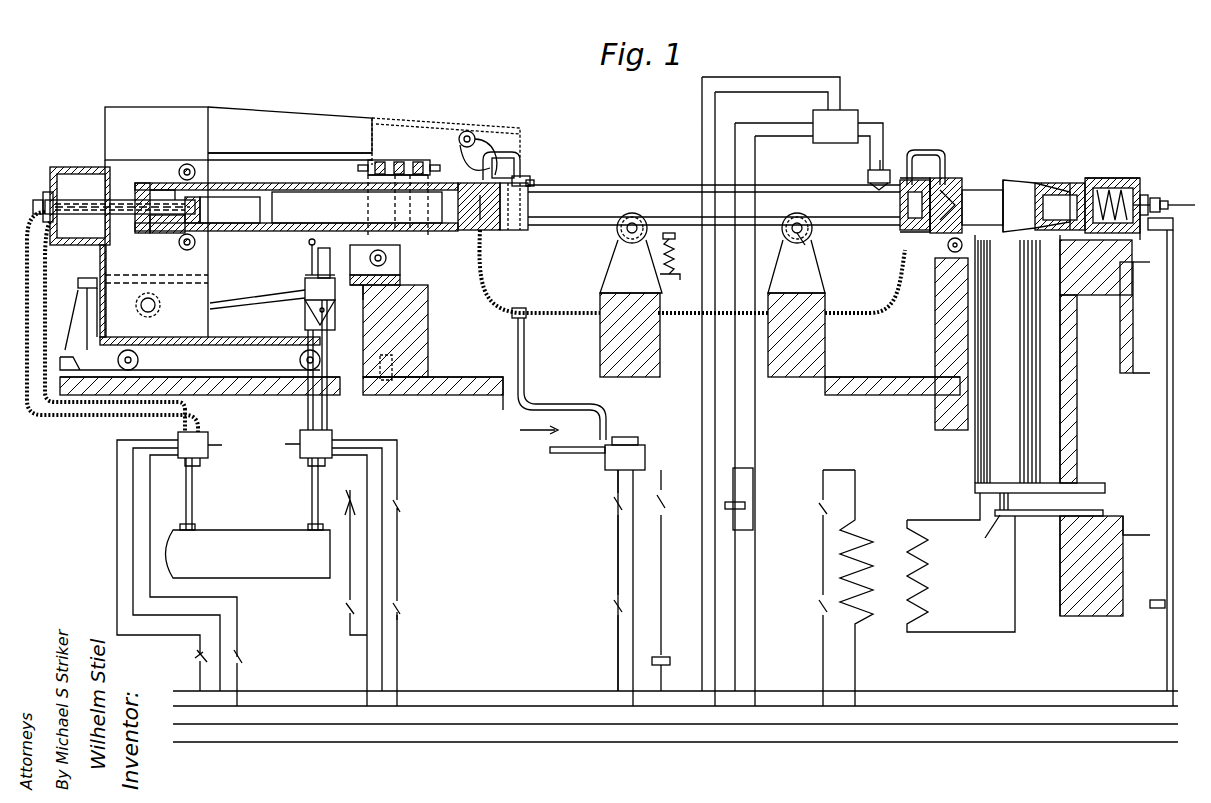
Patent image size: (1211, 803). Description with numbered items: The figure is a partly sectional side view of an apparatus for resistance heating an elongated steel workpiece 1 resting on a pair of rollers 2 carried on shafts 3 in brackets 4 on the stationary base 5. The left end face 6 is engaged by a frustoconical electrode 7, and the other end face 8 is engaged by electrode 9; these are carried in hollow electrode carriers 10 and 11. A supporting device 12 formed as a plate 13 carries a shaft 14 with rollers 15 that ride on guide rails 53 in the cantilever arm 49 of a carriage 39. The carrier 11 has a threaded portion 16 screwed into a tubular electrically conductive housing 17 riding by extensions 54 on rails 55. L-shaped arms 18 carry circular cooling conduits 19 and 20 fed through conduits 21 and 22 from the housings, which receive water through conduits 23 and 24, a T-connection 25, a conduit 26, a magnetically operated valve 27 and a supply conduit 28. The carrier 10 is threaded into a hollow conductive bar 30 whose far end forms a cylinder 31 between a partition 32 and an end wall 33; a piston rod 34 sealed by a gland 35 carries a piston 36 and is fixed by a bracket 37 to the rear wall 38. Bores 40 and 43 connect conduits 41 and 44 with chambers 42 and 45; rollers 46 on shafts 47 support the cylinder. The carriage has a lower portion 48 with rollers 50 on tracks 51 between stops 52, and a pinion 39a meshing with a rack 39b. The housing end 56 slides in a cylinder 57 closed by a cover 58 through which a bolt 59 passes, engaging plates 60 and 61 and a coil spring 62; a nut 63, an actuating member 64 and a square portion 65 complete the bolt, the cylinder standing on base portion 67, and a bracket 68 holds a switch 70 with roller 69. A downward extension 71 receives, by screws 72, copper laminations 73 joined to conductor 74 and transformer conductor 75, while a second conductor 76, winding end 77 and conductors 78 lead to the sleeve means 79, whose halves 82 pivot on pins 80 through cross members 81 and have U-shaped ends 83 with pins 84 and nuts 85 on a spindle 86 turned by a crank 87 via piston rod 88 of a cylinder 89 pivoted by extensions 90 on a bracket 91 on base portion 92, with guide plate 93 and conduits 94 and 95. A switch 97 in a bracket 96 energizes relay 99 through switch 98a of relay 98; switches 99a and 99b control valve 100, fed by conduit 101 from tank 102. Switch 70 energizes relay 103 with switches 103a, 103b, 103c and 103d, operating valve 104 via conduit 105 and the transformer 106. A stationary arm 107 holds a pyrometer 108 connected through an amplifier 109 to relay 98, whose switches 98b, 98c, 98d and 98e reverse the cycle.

The workpiece 1 is at (616, 185).
The rollers 2 is at (812, 232).
The shafts 3 is at (804, 240).
The brackets 4 is at (815, 270).
The stationary base 5 is at (826, 350).
The left end face 6 is at (528, 207).
The electrode 7 is at (498, 220).
The other end face 8 is at (900, 205).
The electrode 9 is at (958, 185).
The electrode carrier 10 is at (470, 228).
The electrode carrier 11 is at (950, 180).
The supporting device 12 is at (490, 145).
The plate 13 is at (505, 155).
The shaft 14 is at (478, 145).
The rollers 15 is at (462, 132).
The threaded portion 16 is at (982, 207).
The tubular electrically conductive housing 17 is at (1020, 182).
The L-shaped arms 18 is at (514, 165).
The cooling liquid conduit 19 is at (530, 178).
The cooling liquid conduit 20 is at (534, 182).
The conduit 21 is at (905, 232).
The conduit 22 is at (930, 150).
The conduit 23 is at (884, 316).
The conduit 24 is at (480, 285).
The T-connection 25 is at (526, 318).
The conduit 26 is at (524, 360).
The magnetically operated valve 27 is at (636, 440).
The supply conduit 28 is at (575, 453).
The hollow electrically conductive bar 30 is at (290, 183).
The cylinder 31 is at (172, 232).
The transverse partition 32 is at (357, 207).
The end wall 33 is at (140, 185).
The piston rod 34 is at (70, 200).
The sealing gland 35 is at (150, 192).
The piston 36 is at (222, 210).
The bracket 37 is at (85, 168).
The rear wall 38 is at (105, 325).
The carriage 39 is at (160, 118).
The pinion 39a is at (158, 310).
The rack 39b is at (132, 283).
The bore 40 is at (170, 170).
The fluid conduit 41 is at (40, 418).
The inner portion 42 is at (243, 183).
The second bore 43 is at (128, 214).
The conduit 44 is at (83, 405).
The inner portion 45 is at (160, 233).
The rollers 46 is at (196, 242).
The shafts 47 is at (208, 250).
The lower portion 48 is at (190, 353).
The cantilever arm 49 is at (290, 113).
The rollers 50 is at (138, 358).
The tracks 51 is at (205, 380).
The stops 52 is at (386, 380).
The guide rails 53 is at (410, 140).
The extensions 54 is at (945, 248).
The rails 55 is at (920, 295).
The tubular portion 56 is at (1072, 183).
The hollow cylinder 57 is at (1125, 178).
The cover 58 is at (1143, 195).
The rod 59 is at (1155, 198).
The plate 60 is at (1100, 180).
The plate 61 is at (1090, 185).
The coil spring 62 is at (1120, 245).
The nut 63 is at (1145, 215).
The switch actuating member 64 is at (1165, 201).
The non-circular portion 65 is at (1185, 205).
The base portion 67 is at (1125, 338).
The bracket 68 is at (1107, 378).
The roller 69 is at (1168, 218).
The switch 70 is at (1144, 292).
The extension 71 is at (1030, 262).
The screws 72 is at (1048, 195).
The copper laminations 73 is at (975, 452).
The electrical conductor 74 is at (975, 484).
The transformer conductor 75 is at (980, 508).
The second conductor 76 is at (1040, 515).
The winding portion 77 is at (1015, 570).
The conductors 78 is at (670, 185).
The sleeve means 79 is at (368, 178).
The pivot pins 80 is at (368, 162).
The cross members 81 is at (384, 202).
The sleeve halves 82 is at (412, 202).
The bottom free ends 83 is at (327, 263).
The pins 84 is at (400, 257).
The nuts 85 is at (400, 285).
The spindle 86 is at (380, 290).
The crank 87 is at (310, 255).
The piston rod 88 is at (315, 268).
The cylinder 89 is at (282, 306).
The extensions 90 is at (330, 325).
The bracket 91 is at (340, 332).
The base portion 92 is at (428, 358).
The guide plate 93 is at (400, 278).
The fluid pressure conduit 94 is at (308, 412).
The fluid pressure conduit 95 is at (327, 410).
The bracket 96 is at (681, 253).
The switch 97 is at (672, 277).
The relay 98 is at (753, 500).
The normally closed switch 98a is at (668, 502).
The normally closed switch 98b is at (614, 505).
The normally closed switch 98c is at (402, 505).
The normally open switch 98d is at (344, 493).
The relay contact 98e is at (823, 510).
The relay 99 is at (655, 657).
The normally open switch 99a is at (243, 658).
The normally closed switch 99b is at (205, 655).
The valve 100 is at (208, 436).
The conduit 101 is at (192, 492).
The container 102 is at (222, 530).
The relay 103 is at (1152, 602).
The normally open switch 103a is at (403, 610).
The normally closed switch 103b is at (346, 612).
The normally open switch 103c is at (614, 608).
The normally open switch 103d is at (818, 604).
The valve 104 is at (300, 455).
The conduit 105 is at (312, 494).
The transformer 106 is at (905, 630).
The stationary arm 107 is at (885, 165).
The pyrometer 108 is at (868, 176).
The amplifier 109 is at (855, 110).